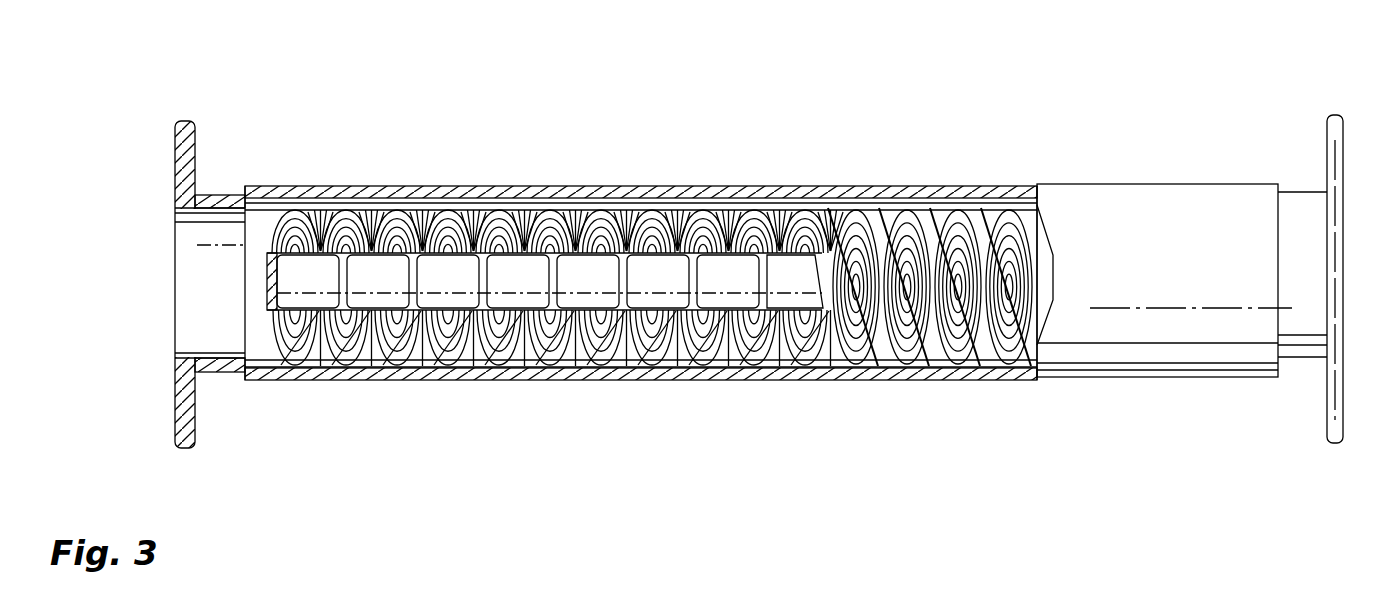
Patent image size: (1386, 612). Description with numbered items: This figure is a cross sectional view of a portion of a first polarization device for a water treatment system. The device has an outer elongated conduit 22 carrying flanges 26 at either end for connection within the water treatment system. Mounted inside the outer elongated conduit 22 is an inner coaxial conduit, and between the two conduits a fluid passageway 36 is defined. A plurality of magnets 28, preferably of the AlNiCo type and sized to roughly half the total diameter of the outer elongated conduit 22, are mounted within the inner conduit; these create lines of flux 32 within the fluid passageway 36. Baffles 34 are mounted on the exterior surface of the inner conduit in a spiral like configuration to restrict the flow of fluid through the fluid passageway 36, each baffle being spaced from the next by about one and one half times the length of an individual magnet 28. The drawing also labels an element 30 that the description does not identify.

The outer elongated conduit 22 is at (720, 190).
The flanges 26 is at (190, 386).
The magnets 28 is at (640, 284).
The upper spring loops 30 is at (650, 252).
The lines of flux 32 is at (893, 208).
The baffles 34 is at (618, 346).
The fluid passageway 36 is at (958, 207).